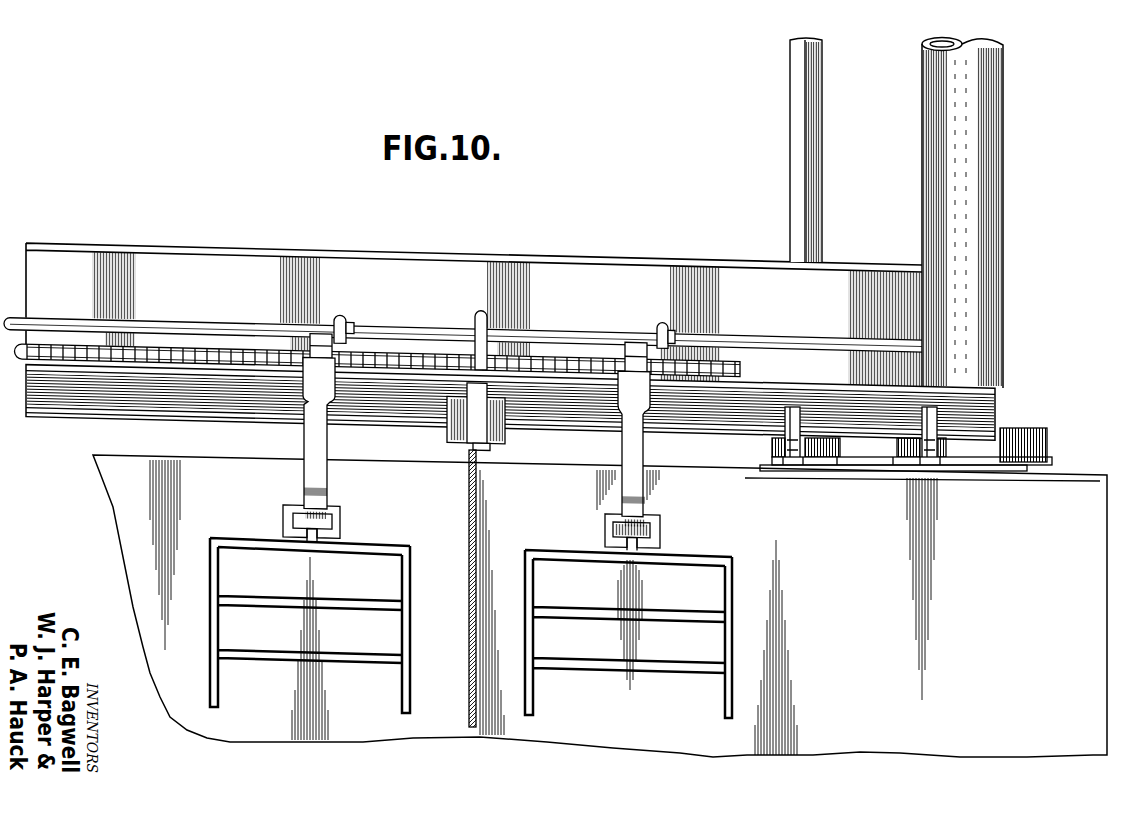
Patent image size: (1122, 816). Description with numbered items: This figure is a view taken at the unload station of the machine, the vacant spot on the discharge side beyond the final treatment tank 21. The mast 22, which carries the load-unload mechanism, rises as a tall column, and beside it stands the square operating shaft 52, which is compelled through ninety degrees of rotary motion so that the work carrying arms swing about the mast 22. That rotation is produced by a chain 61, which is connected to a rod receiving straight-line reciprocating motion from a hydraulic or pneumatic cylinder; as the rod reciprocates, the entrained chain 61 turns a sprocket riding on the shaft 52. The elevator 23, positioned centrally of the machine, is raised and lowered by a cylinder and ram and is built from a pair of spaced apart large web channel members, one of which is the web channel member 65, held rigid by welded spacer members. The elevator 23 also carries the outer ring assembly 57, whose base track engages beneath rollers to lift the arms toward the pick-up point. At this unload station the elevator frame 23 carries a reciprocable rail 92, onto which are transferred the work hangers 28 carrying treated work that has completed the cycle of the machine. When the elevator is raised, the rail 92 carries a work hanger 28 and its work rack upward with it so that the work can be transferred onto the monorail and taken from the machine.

The final treatment tank 21 is at (443, 548).
The mast 22 is at (935, 185).
The elevator 23 is at (516, 246).
The work hanger 28 is at (313, 482).
The square operating shaft 52 is at (797, 213).
The outer ring assembly 57 is at (1042, 428).
The chain 61 is at (253, 347).
The web channel member 65 is at (425, 309).
The reciprocable rail 92 is at (728, 400).